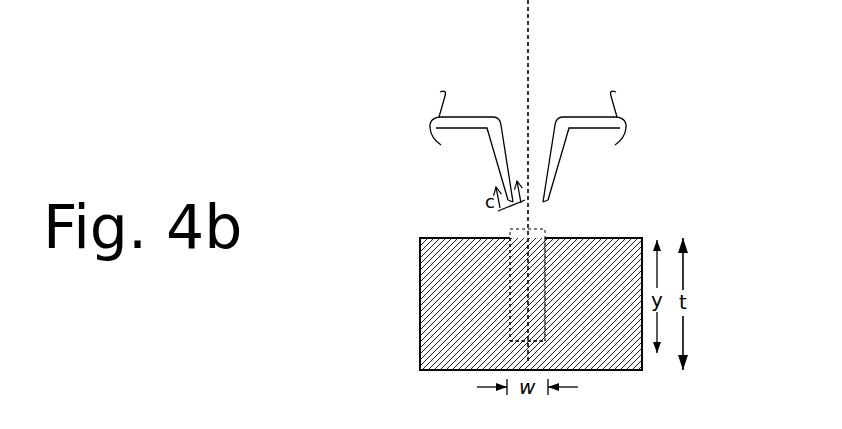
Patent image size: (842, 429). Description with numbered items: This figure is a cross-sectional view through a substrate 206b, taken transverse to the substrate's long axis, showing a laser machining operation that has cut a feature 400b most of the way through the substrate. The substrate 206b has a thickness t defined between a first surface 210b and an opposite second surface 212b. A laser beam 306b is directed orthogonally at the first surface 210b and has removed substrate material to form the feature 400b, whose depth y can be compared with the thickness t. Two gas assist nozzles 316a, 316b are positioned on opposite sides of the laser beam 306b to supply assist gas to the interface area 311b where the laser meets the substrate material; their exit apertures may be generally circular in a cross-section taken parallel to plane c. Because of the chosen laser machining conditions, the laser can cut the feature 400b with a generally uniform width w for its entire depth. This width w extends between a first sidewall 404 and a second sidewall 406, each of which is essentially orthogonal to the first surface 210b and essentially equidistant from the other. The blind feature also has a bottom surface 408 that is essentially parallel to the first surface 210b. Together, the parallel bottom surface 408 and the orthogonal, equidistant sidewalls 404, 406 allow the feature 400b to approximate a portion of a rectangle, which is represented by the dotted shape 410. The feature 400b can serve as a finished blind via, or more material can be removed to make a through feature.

The laser beam 306b is at (527, 52).
The gas assist nozzle 316a is at (463, 117).
The gas assist nozzle 316b is at (593, 117).
The first surface 210b is at (440, 236).
The feature 400b is at (516, 281).
The substrate 206b is at (419, 323).
The second surface 212b is at (435, 372).
The dotted shape 410 is at (543, 231).
The second sidewall 406 is at (510, 258).
The first sidewall 404 is at (546, 298).
The bottom surface 408 is at (519, 355).
The interface area 311b is at (537, 350).